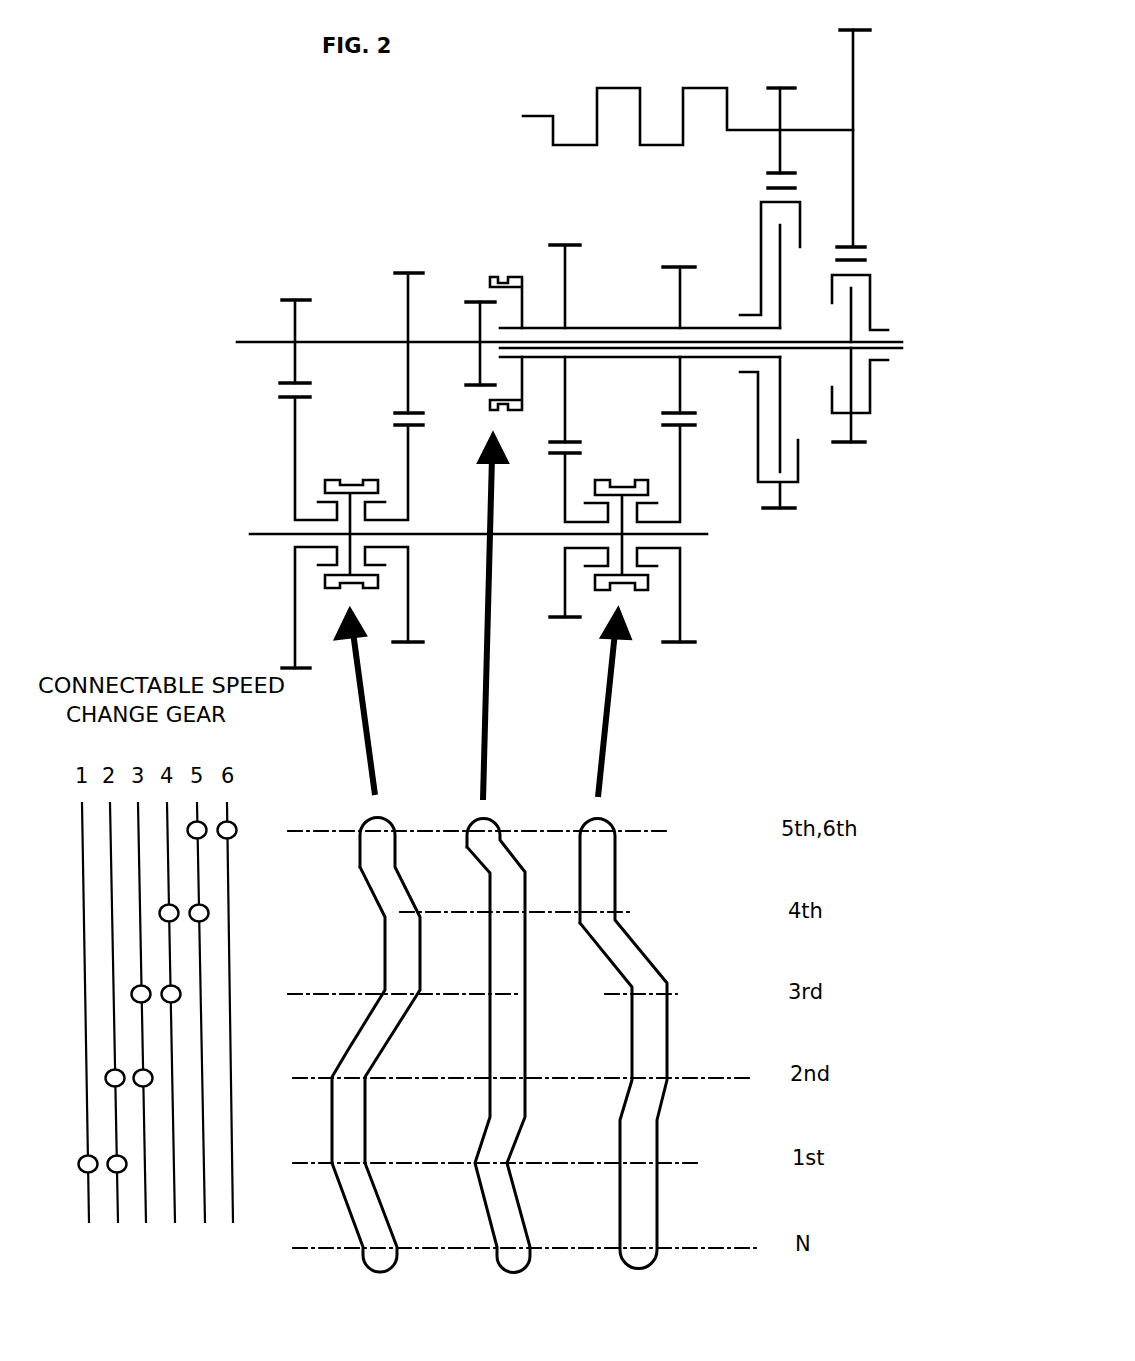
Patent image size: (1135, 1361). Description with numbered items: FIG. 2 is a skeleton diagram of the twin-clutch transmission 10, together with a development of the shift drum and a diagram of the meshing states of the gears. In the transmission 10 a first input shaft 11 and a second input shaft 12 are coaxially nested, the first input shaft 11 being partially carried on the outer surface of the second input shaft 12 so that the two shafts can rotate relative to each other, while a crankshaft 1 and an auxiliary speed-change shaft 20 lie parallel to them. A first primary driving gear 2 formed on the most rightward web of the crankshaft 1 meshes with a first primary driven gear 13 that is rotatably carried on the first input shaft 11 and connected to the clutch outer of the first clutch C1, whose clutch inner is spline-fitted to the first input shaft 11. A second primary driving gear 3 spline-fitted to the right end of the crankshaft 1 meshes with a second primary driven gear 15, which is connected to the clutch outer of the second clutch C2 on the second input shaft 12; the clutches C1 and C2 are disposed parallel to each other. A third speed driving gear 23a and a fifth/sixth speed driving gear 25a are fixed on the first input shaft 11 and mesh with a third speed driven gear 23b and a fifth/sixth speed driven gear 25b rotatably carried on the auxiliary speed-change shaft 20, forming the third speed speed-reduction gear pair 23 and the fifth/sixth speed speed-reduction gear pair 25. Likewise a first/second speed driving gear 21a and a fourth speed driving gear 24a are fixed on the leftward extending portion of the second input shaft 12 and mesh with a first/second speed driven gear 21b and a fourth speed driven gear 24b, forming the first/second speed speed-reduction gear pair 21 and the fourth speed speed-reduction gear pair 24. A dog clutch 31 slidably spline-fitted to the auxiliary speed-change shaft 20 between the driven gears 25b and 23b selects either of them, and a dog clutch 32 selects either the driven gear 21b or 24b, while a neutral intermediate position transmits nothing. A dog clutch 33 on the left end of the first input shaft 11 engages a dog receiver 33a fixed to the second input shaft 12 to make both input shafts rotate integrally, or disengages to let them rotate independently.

The crankshaft 1 is at (740, 128).
The first primary driving gear 2 is at (778, 111).
The second primary driving gear 3 is at (857, 72).
The twin-clutch transmission 10 is at (258, 137).
The first input shaft 11 is at (537, 327).
The second input shaft 12 is at (445, 340).
The first primary driven gear 13 is at (783, 497).
The second primary driven gear 15 is at (855, 430).
The auxiliary speed-change shaft 20 is at (461, 537).
The first/second speed speed-reduction gear pair 21 is at (271, 409).
The first/second speed driving gear 21a is at (293, 322).
The first/second speed driven gear 21b is at (295, 600).
The third speed speed-reduction gear pair 23 is at (718, 434).
The third speed driving gear 23a is at (682, 300).
The third speed driven gear 23b is at (681, 618).
The fourth speed speed-reduction gear pair 24 is at (428, 436).
The fourth speed driving gear 24a is at (406, 308).
The fourth speed driven gear 24b is at (412, 603).
The fifth/sixth speed speed-reduction gear pair 25 is at (535, 450).
The fifth/sixth speed driving gear 25a is at (565, 272).
The fifth/sixth speed driven gear 25b is at (560, 583).
The dog clutch 31 is at (619, 472).
The dog clutch 32 is at (345, 470).
The dog clutch 33 is at (492, 268).
The dog receiver 33a is at (478, 361).
The first clutch C1 is at (738, 230).
The second clutch C2 is at (888, 298).